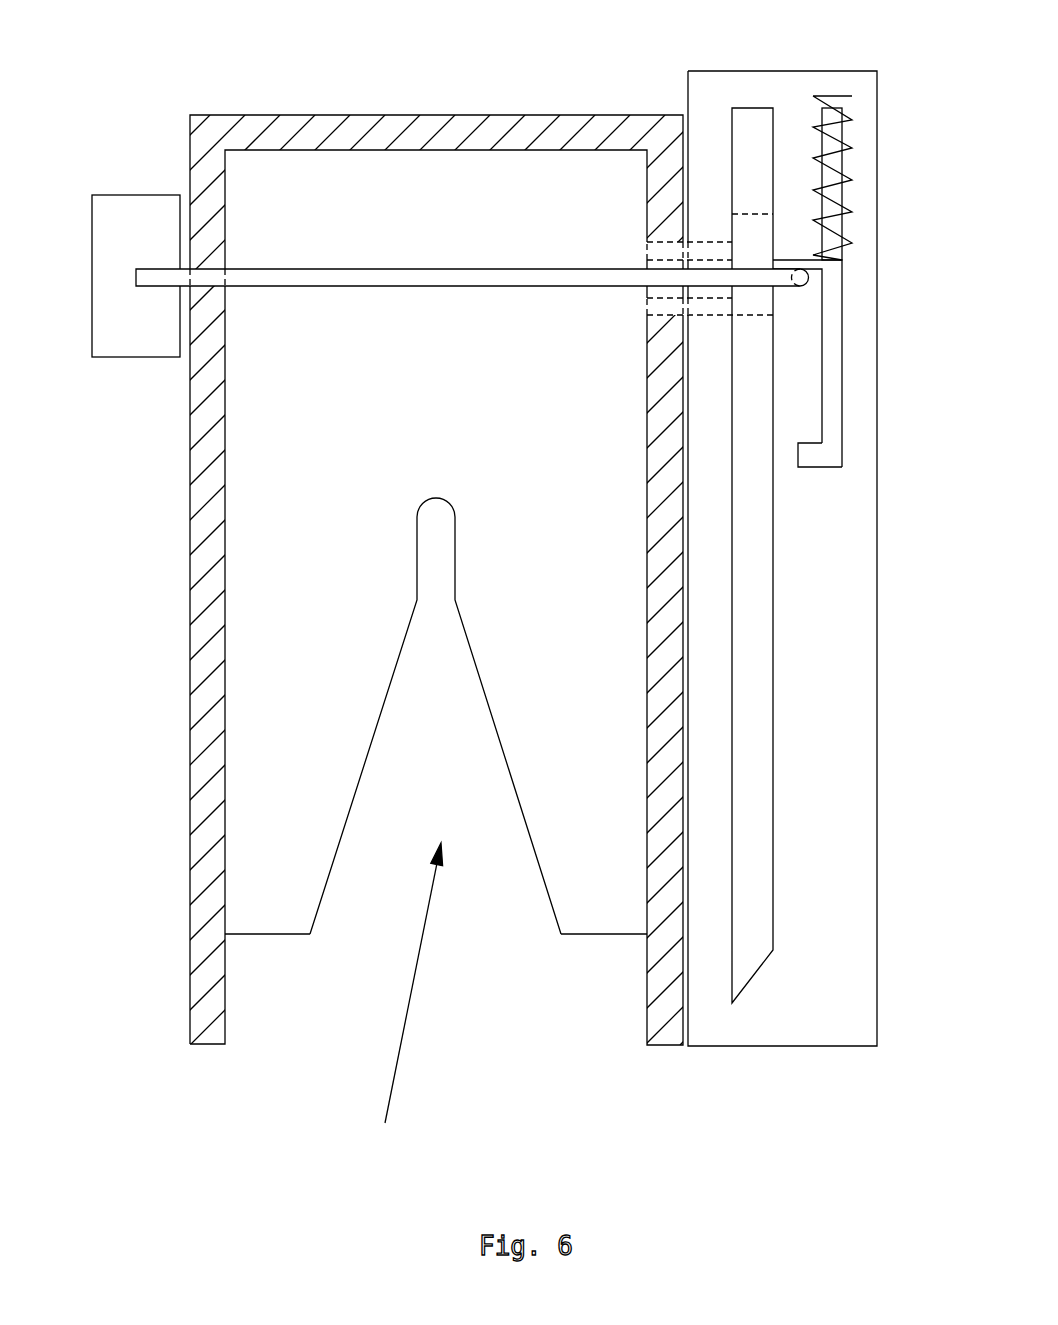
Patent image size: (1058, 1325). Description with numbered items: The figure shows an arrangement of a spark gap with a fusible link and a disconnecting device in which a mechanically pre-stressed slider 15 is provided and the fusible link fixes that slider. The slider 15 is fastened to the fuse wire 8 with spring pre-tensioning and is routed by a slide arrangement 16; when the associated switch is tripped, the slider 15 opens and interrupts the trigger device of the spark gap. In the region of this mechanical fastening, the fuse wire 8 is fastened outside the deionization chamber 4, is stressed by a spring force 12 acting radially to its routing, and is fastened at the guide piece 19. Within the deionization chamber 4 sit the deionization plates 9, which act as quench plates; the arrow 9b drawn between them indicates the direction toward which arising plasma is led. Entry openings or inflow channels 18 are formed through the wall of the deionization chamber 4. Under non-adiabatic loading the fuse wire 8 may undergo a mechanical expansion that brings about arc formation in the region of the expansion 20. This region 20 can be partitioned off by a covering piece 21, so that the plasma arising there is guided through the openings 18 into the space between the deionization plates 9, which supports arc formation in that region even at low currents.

The deionization chamber 4 is at (190, 463).
The fuse wire 8 is at (400, 278).
The deionization plates 9 is at (575, 935).
The direction of movement 9b is at (385, 1123).
The spring force 12 is at (852, 118).
The slider 15 is at (750, 740).
The slide arrangement 16 is at (877, 280).
The inflow channels 18 is at (662, 306).
The guide piece 19 is at (130, 357).
The region of the expansion 20 is at (798, 333).
The covering piece 21 is at (842, 447).